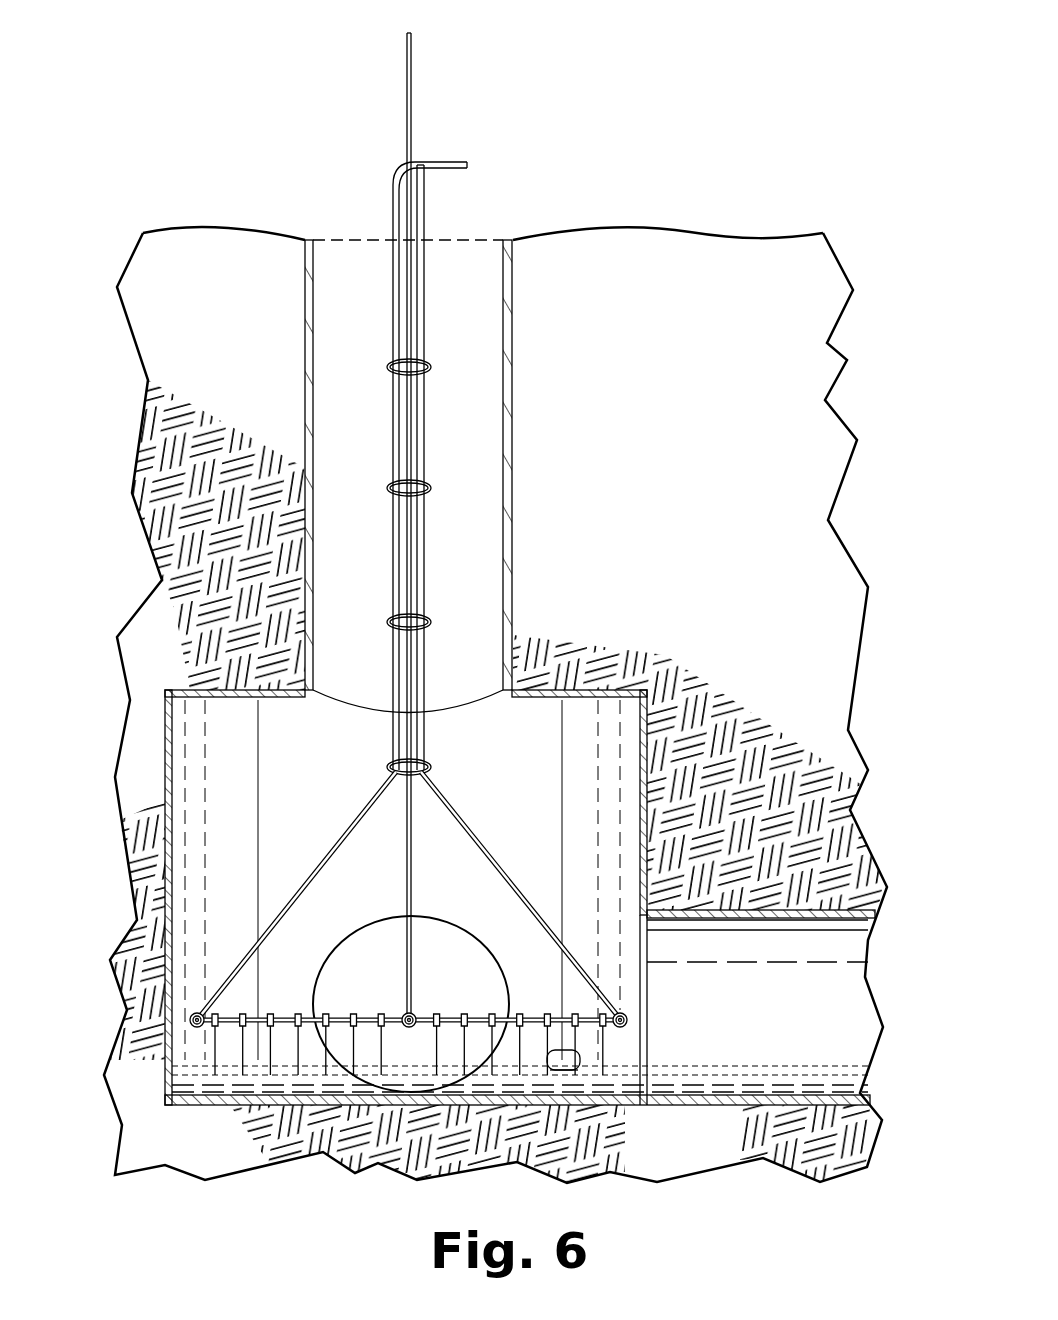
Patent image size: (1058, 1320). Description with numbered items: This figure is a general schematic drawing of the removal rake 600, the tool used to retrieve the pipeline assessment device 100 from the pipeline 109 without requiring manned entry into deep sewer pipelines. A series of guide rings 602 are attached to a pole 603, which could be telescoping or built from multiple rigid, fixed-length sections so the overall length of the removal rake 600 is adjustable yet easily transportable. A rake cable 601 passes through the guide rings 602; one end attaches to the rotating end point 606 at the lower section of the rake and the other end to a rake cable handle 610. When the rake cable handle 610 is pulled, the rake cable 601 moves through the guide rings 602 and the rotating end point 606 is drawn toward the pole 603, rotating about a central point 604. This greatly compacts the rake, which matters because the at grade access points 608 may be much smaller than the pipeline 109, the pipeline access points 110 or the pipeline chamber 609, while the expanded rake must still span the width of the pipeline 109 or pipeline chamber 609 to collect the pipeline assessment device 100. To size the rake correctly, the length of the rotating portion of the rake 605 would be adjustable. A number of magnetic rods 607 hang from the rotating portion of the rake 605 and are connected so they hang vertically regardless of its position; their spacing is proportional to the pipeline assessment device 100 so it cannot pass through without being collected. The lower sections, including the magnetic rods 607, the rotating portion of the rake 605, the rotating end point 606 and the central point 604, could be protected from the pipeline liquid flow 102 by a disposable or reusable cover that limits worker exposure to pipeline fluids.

The pipeline assessment device 100 is at (562, 1038).
The pipeline liquid flow 102 is at (718, 1078).
The pipeline 109 is at (338, 972).
The pipeline access point 110 is at (513, 455).
The removal rake 600 is at (333, 938).
The rake cable 601 is at (330, 858).
The guide rings 602 is at (432, 622).
The pole 603 is at (408, 28).
The central point 604 is at (413, 1012).
The rotating portion of the rake 605 is at (285, 1016).
The rotating end point 606 is at (194, 1017).
The magnetic rods 607 is at (268, 1055).
The at grade access points 608 is at (338, 238).
The pipeline chamber 609 is at (182, 765).
The rake cable handle 610 is at (457, 160).